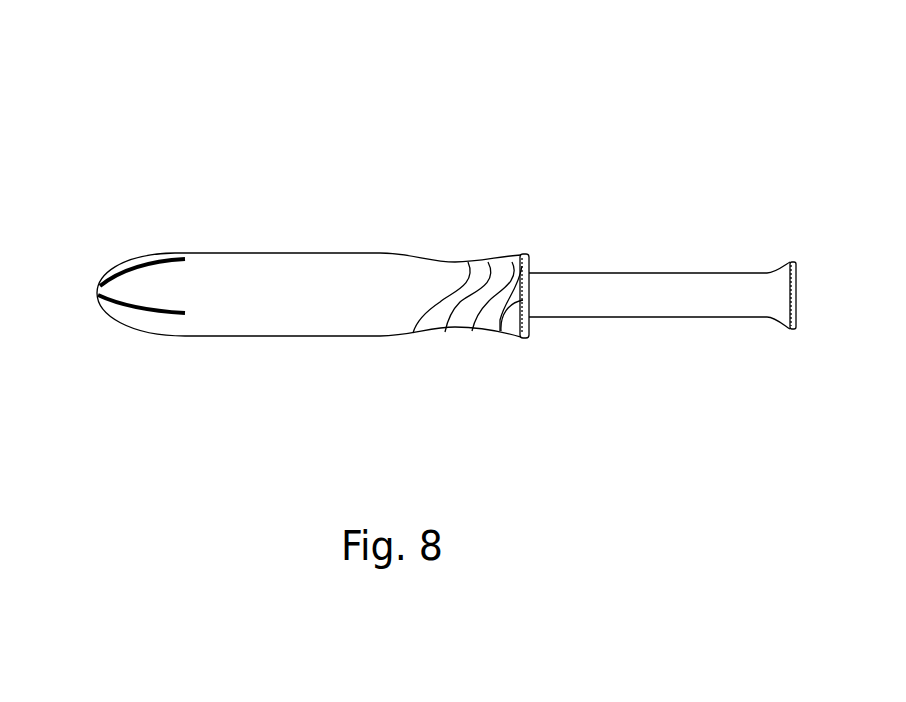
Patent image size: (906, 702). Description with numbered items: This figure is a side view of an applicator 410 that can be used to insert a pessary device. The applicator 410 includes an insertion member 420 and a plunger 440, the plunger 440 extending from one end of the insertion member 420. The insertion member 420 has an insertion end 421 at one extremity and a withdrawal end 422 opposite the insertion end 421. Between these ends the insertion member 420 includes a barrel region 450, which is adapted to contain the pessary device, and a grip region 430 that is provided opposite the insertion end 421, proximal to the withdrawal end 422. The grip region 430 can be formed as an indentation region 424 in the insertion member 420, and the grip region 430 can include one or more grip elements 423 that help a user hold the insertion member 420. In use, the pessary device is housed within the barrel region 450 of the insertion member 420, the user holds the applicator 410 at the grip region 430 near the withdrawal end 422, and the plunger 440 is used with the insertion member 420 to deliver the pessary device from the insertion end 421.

The applicator 410 is at (140, 92).
The insertion member 420 is at (265, 250).
The insertion end 421 is at (104, 270).
The withdrawal end 422 is at (517, 339).
The grip elements 423 is at (447, 333).
The indentation region 424 is at (450, 256).
The grip region 430 is at (483, 256).
The plunger 440 is at (636, 270).
The barrel region 450 is at (288, 322).